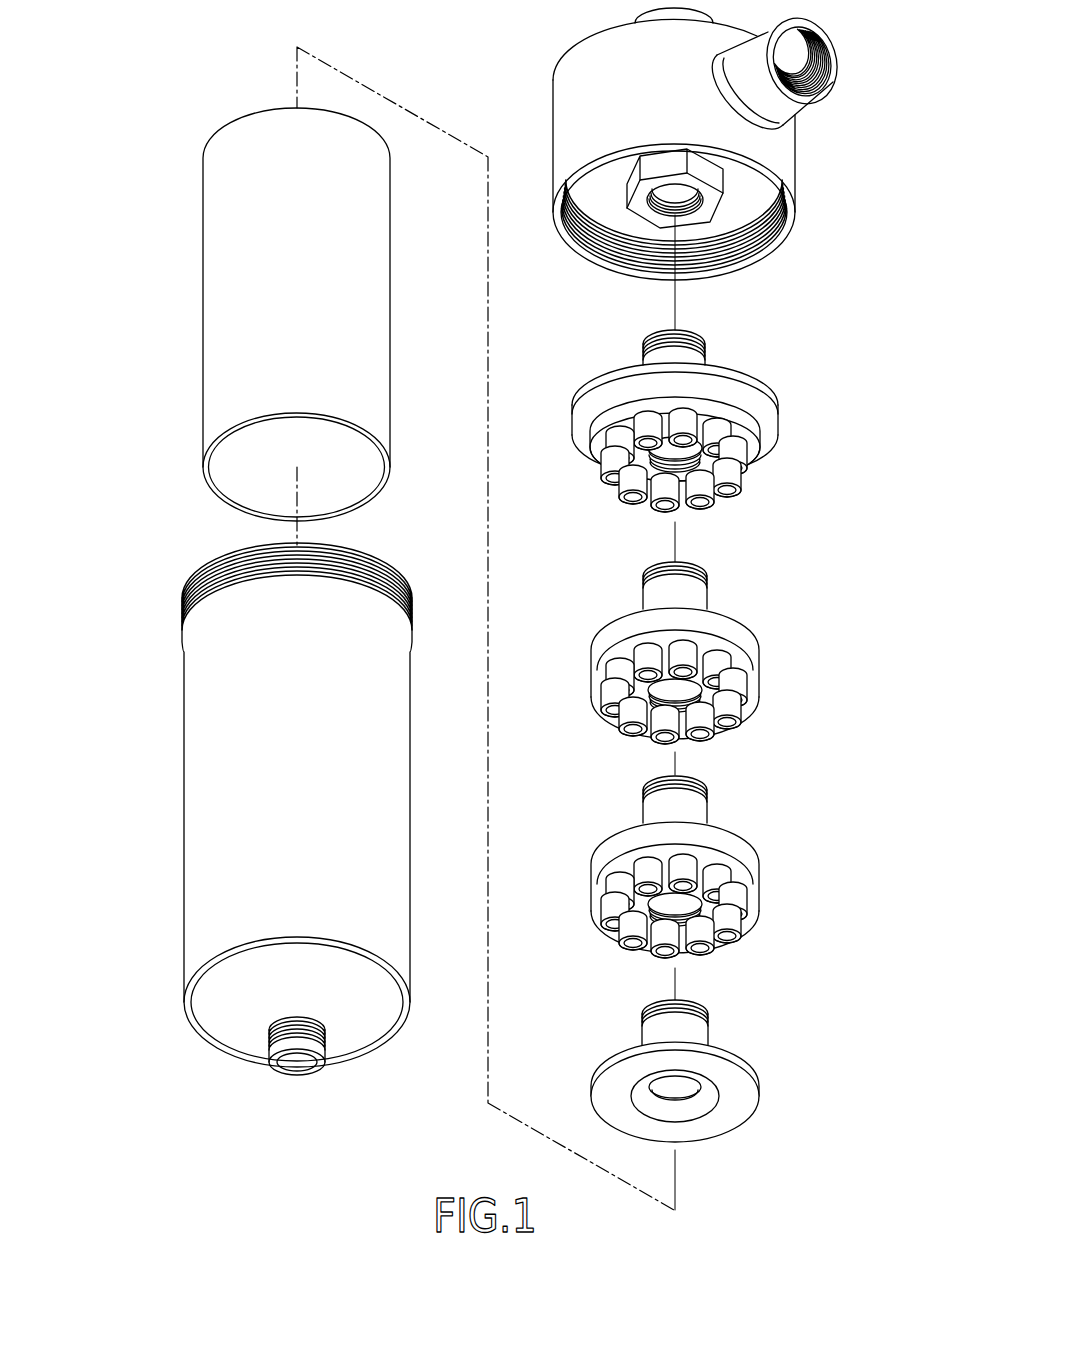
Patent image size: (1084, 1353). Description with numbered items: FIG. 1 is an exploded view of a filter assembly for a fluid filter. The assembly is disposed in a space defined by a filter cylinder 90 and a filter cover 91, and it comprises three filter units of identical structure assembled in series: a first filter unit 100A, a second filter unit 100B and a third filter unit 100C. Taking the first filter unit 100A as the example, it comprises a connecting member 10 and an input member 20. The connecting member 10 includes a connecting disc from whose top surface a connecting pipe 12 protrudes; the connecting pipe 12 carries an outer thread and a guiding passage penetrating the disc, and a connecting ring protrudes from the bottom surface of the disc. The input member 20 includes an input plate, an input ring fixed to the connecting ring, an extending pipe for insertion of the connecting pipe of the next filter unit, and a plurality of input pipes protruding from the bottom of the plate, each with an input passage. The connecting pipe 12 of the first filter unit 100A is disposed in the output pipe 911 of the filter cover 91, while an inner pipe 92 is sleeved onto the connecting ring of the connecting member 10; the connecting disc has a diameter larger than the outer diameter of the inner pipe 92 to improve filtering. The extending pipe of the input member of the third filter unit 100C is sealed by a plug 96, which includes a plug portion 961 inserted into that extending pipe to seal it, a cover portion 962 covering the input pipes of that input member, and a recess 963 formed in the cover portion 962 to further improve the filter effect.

The connecting member 10 is at (743, 372).
The connecting pipe 12 is at (688, 337).
The input member 20 is at (600, 462).
The filter cylinder 90 is at (188, 942).
The filter cover 91 is at (582, 70).
The output pipe 911 is at (653, 213).
The inner pipe 92 is at (210, 387).
The plug 96 is at (702, 1081).
The plug portion 961 is at (653, 1007).
The cover portion 962 is at (733, 1082).
The recess 963 is at (682, 1088).
The first filter unit 100A is at (730, 412).
The second filter unit 100B is at (757, 630).
The third filter unit 100C is at (757, 844).